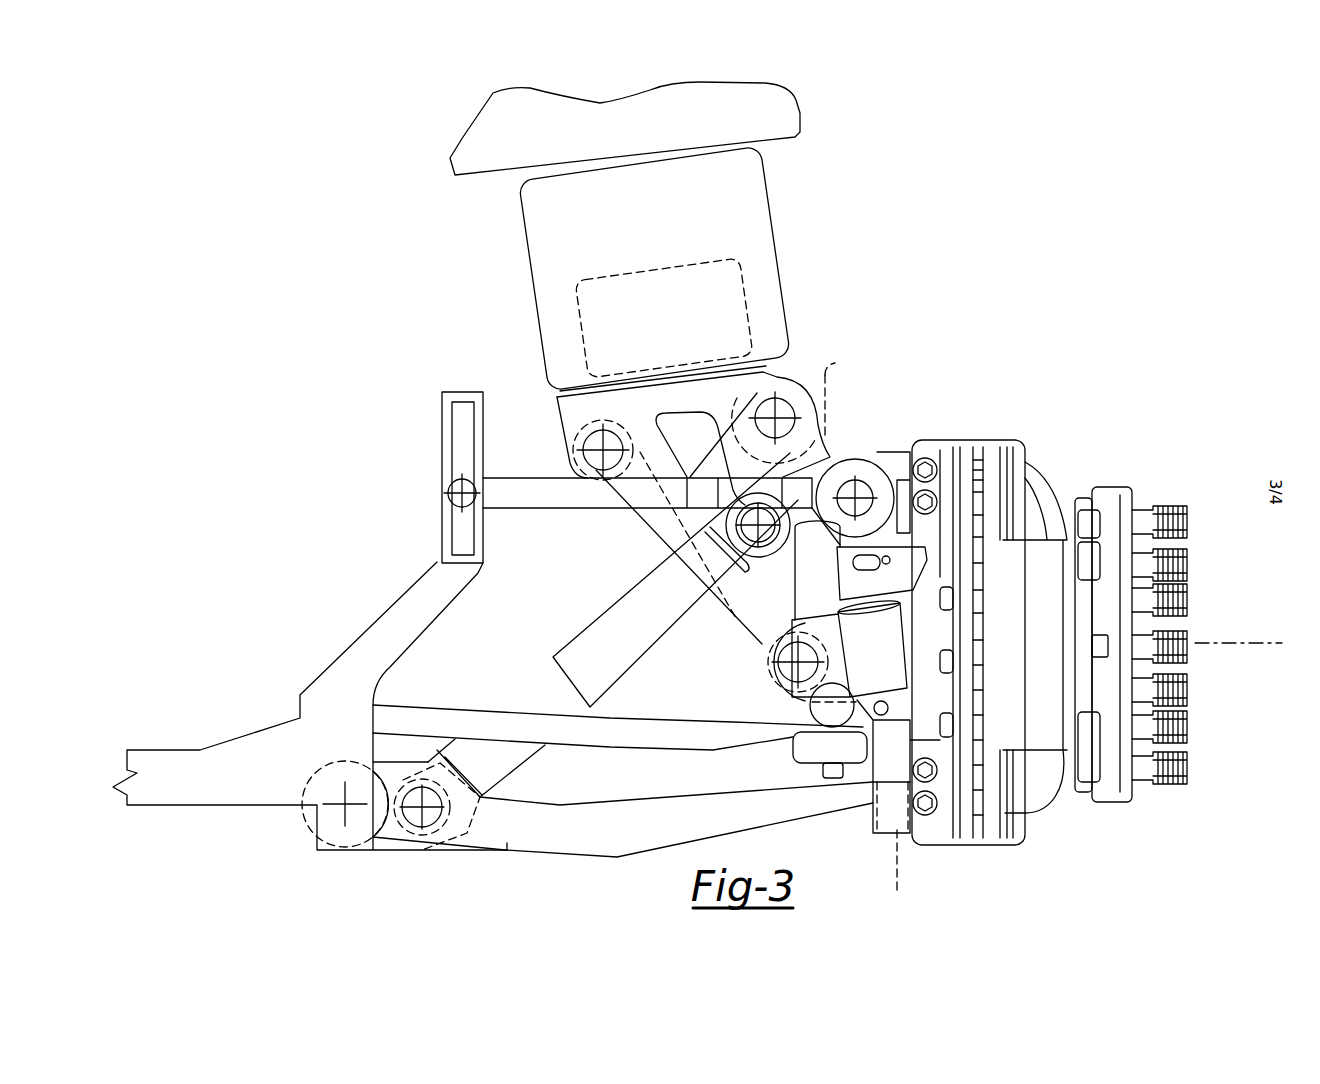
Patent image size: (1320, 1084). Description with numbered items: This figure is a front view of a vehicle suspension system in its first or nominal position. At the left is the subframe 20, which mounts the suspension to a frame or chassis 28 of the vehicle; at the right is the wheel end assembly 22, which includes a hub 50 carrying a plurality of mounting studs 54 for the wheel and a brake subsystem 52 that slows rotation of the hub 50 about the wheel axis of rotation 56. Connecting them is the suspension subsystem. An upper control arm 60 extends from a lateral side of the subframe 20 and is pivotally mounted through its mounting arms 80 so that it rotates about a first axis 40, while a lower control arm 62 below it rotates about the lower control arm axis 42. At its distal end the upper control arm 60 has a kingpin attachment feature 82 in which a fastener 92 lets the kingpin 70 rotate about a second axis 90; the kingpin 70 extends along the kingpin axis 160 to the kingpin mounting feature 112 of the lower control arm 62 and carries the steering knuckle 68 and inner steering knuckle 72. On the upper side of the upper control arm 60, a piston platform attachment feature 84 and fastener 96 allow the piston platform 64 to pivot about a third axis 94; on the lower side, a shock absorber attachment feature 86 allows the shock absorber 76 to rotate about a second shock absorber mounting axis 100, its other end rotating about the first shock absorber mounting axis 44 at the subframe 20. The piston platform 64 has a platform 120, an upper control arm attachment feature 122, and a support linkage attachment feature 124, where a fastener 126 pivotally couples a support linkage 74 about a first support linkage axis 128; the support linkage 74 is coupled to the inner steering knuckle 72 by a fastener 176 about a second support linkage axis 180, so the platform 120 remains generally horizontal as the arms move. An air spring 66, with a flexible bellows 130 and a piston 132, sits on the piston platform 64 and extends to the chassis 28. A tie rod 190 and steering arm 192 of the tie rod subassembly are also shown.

The subframe 20 is at (271, 781).
The wheel end assembly 22 is at (1040, 456).
The frame or chassis 28 is at (584, 139).
The first axis 40 is at (461, 492).
The lower control arm axis 42 is at (344, 805).
The first shock absorber mounting axis 44 is at (421, 810).
The hub 50 is at (1100, 800).
The brake subsystem 52 is at (967, 440).
The mounting studs 54 is at (1189, 562).
The wheel axis of rotation 56 is at (1236, 643).
The upper control arm 60 is at (559, 502).
The lower control arm 62 is at (665, 843).
The piston platform 64 is at (666, 413).
The air spring 66 is at (512, 212).
The steering knuckle 68 is at (893, 730).
The kingpin 70 is at (883, 832).
The inner steering knuckle 72 is at (895, 641).
The support linkage 74 is at (668, 536).
The shock absorber 76 is at (626, 650).
The mounting arms 80 is at (597, 510).
The kingpin attachment feature 82 is at (869, 480).
The piston platform attachment feature 84 is at (786, 400).
The shock absorber attachment feature 86 is at (740, 515).
The second axis 90 is at (856, 495).
The fastener 92 is at (853, 497).
The third axis 94 is at (774, 417).
The fastener 96 is at (800, 400).
The second shock absorber mounting axis 100 is at (760, 528).
The kingpin mounting feature 112 is at (870, 795).
The platform 120 is at (578, 392).
The upper control arm attachment feature 122 is at (835, 363).
The support linkage attachment feature 124 is at (651, 450).
The fastener 126 is at (585, 477).
The first support linkage axis 128 is at (600, 448).
The flexible bellows 130 is at (523, 300).
The piston 132 is at (572, 337).
The kingpin axis 160 is at (900, 880).
The fastener 176 is at (812, 700).
The second support linkage axis 180 is at (790, 664).
The tie rod 190 is at (660, 745).
The steering arm 192 is at (793, 752).